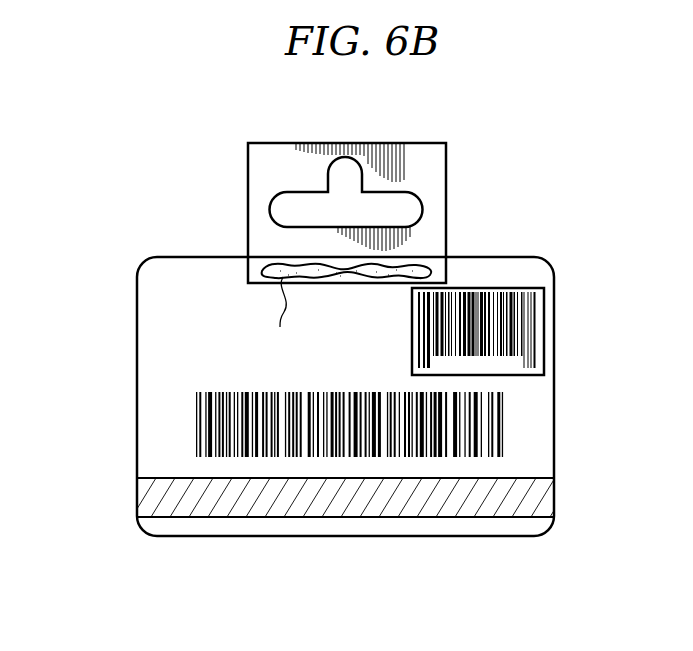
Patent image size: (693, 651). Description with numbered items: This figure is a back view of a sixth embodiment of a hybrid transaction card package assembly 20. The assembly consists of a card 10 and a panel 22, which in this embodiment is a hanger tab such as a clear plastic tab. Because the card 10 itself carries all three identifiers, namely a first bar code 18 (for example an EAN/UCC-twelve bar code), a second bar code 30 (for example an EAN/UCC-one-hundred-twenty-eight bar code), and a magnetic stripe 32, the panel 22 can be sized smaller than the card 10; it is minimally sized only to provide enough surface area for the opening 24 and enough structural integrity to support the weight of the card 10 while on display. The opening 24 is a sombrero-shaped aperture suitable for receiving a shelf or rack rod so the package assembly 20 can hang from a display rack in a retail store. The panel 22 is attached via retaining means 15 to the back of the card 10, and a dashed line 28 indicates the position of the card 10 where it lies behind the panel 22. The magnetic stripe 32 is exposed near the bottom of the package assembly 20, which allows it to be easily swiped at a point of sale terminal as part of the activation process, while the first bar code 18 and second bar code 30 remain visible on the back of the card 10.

The card 10 is at (137, 378).
The retaining means 15 is at (279, 313).
The first bar code 18 is at (545, 318).
The hybrid transaction card package assembly 20 is at (197, 130).
The panel 22 is at (447, 190).
The opening 24 is at (349, 167).
The dashed line 28 is at (268, 263).
The second bar code 30 is at (508, 412).
The magnetic stripe 32 is at (555, 487).